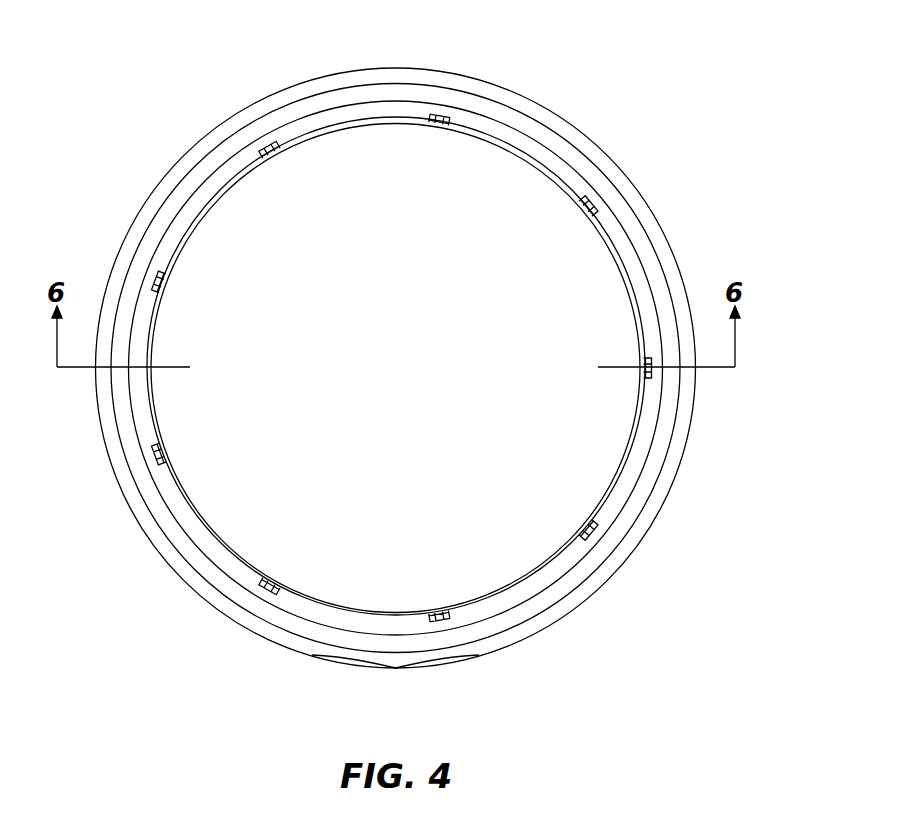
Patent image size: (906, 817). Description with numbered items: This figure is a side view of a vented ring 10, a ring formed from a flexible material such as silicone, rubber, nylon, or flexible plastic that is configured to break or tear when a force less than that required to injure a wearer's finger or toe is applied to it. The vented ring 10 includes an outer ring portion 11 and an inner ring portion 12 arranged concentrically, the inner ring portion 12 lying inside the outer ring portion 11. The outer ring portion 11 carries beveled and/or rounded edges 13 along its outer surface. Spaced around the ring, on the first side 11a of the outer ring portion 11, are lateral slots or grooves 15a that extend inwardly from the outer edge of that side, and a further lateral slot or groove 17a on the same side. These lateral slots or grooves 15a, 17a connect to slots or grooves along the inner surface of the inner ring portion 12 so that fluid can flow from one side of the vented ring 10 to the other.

The vented ring 10 is at (408, 365).
The outer ring portion 11 is at (657, 215).
The first side of the outer ring portion 11a is at (612, 190).
The inner ring portion 12 is at (613, 252).
The beveled and/or rounded edges 13 is at (523, 100).
The lateral slots or grooves 15a is at (439, 116).
The lateral slots or grooves 17a is at (266, 146).